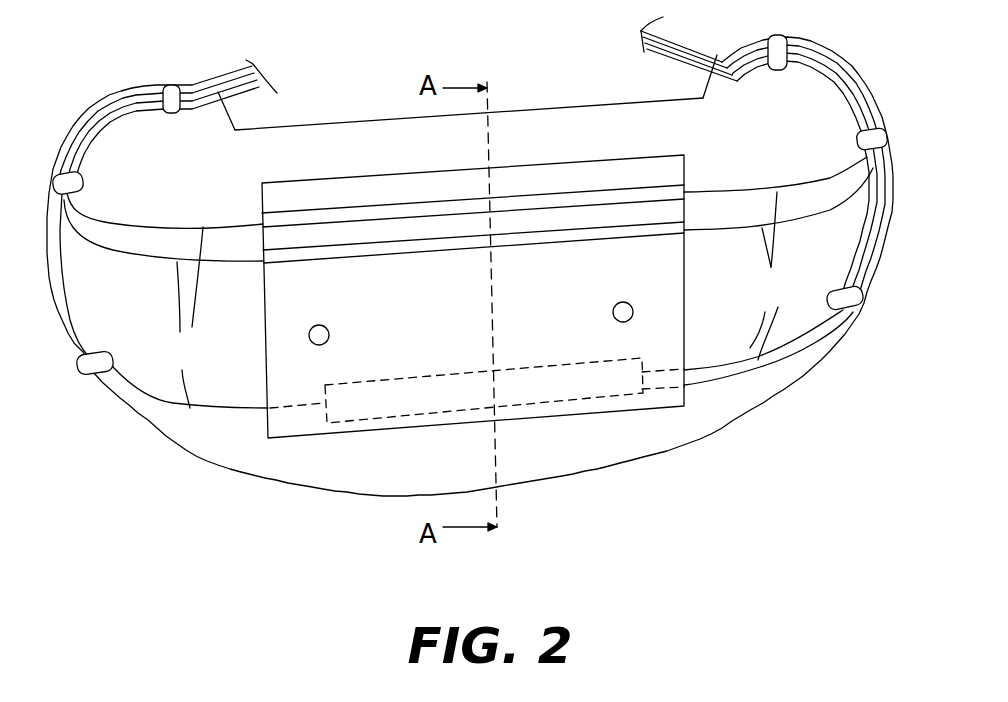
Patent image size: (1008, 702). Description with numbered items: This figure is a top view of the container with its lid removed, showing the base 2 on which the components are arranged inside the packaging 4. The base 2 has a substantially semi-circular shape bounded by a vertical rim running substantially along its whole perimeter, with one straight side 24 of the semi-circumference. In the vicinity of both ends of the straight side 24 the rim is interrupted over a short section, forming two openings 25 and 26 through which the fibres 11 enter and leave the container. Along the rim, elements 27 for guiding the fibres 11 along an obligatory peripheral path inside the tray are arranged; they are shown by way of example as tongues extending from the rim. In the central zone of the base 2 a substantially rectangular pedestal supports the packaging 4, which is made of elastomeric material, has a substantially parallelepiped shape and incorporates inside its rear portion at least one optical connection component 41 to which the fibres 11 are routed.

The base 2 is at (693, 442).
The packaging 4 is at (295, 440).
The optical connection component 41 is at (590, 392).
The fibres 11 is at (477, 300).
The straight side 24 is at (353, 122).
The opening 25 is at (233, 121).
The opening 26 is at (702, 90).
The guiding elements 27 is at (780, 70).